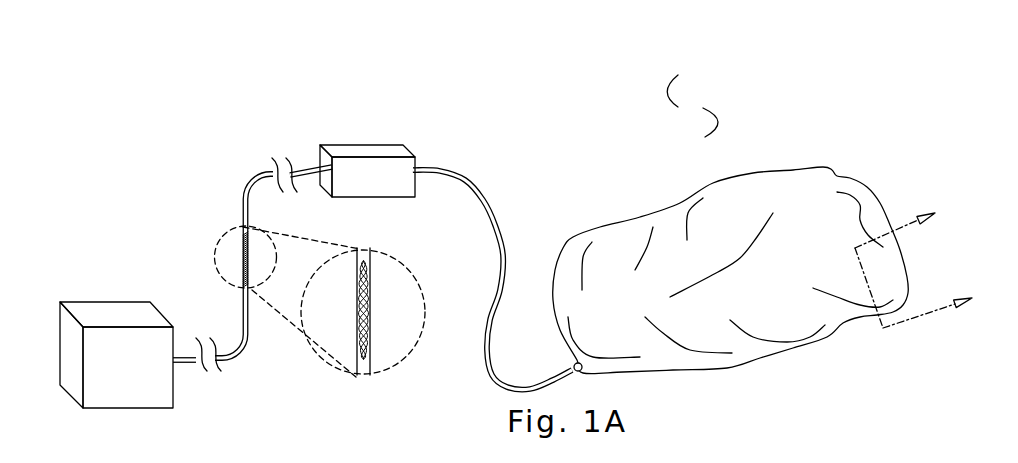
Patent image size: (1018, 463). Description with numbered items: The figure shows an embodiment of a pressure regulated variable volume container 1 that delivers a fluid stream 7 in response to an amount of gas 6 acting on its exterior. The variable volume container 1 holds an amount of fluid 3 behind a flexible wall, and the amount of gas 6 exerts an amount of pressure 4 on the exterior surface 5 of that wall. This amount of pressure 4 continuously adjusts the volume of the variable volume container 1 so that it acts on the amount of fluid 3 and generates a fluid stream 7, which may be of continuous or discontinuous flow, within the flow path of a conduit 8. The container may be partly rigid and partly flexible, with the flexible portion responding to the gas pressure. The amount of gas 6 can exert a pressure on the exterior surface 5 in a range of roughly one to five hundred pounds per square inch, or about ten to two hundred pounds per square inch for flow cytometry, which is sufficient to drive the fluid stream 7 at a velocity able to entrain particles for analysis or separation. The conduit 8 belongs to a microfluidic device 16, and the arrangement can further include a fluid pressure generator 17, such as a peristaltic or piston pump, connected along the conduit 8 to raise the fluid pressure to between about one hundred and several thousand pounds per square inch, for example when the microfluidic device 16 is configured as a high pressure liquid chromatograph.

The variable volume container 1 is at (678, 207).
The amount of fluid 3 is at (825, 198).
The amount of pressure 4 is at (782, 152).
The exterior surface 5 is at (705, 458).
The amount of gas 6 is at (692, 106).
The fluid stream 7 is at (367, 290).
The conduit 8 is at (250, 171).
The microfluidic device 16 is at (150, 388).
The fluid pressure generator 17 is at (383, 150).